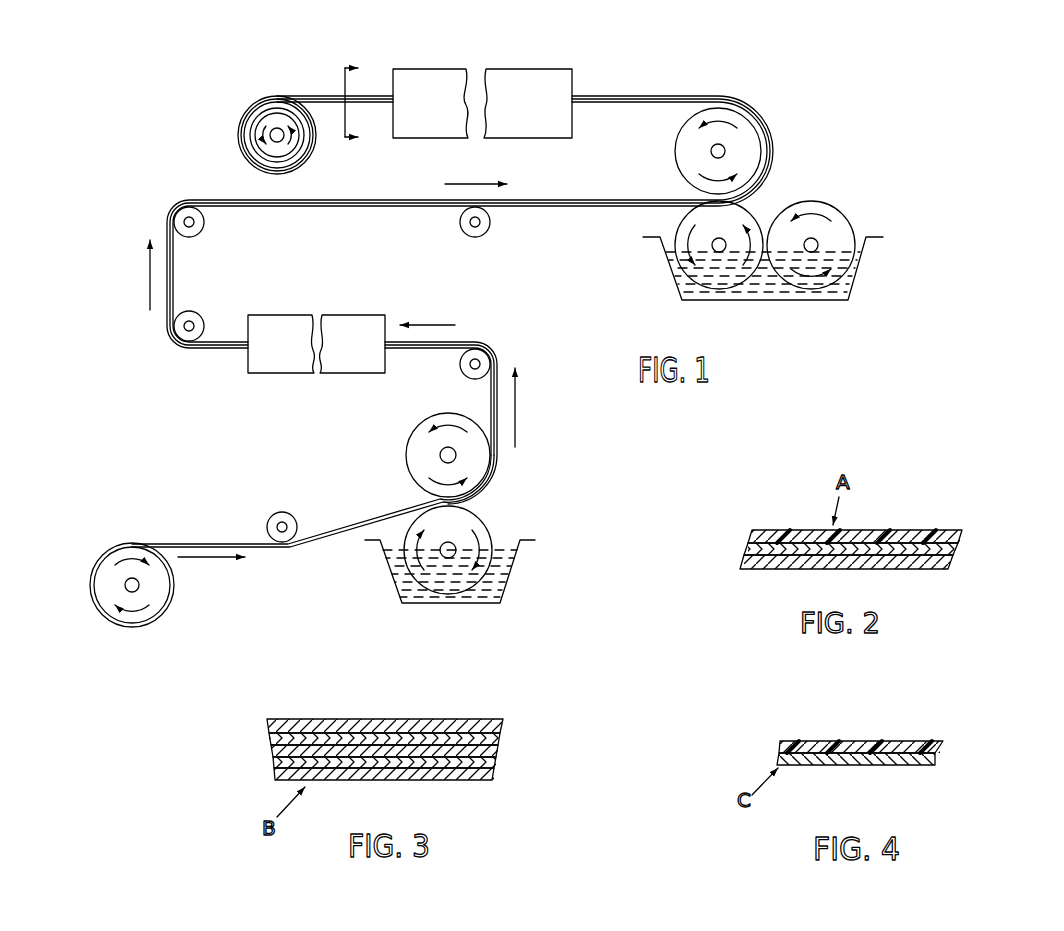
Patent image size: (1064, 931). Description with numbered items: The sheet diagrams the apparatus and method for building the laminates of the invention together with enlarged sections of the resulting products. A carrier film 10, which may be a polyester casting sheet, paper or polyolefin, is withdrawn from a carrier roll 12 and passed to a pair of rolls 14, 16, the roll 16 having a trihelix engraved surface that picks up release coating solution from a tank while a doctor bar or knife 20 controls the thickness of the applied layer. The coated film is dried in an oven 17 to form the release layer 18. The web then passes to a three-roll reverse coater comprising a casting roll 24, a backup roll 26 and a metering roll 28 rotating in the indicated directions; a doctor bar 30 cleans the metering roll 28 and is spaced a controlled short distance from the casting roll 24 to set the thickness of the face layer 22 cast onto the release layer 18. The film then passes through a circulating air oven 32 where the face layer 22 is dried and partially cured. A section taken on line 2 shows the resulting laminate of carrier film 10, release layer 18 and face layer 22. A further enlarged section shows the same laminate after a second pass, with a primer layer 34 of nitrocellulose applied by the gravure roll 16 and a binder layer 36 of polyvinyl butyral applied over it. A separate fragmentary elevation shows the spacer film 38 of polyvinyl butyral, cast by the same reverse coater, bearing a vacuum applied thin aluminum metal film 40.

In FIG. 1, the section line 2— 2 is at (360, 102).
In FIG. 1, the carrier film 10 is at (188, 543).
In FIG. 2, the carrier film 10 is at (757, 569).
In FIG. 3, the carrier film 10 is at (490, 777).
In FIG. 1, the carrier roll 12 is at (160, 616).
In FIG. 1, the roll 14 is at (408, 432).
In FIG. 1, the roll 16 is at (481, 520).
In FIG. 1, the oven 17 is at (351, 315).
In FIG. 1, the release layer 18 is at (223, 342).
In FIG. 2, the release layer 18 is at (950, 548).
In FIG. 3, the release layer 18 is at (277, 760).
In FIG. 1, the doctor bar or knife 20 is at (382, 523).
In FIG. 2, the face layer 22 is at (917, 530).
In FIG. 3, the face layer 22 is at (497, 751).
In FIG. 1, the casting roll 24 is at (662, 214).
In FIG. 1, the backup roll 26 is at (676, 143).
In FIG. 1, the metering roll 28 is at (826, 203).
In FIG. 1, the doctor bar 30 is at (877, 202).
In FIG. 1, the oven 32 is at (575, 70).
In FIG. 3, the primer layer 34 is at (263, 740).
In FIG. 3, the binder layer 36 is at (380, 719).
In FIG. 4, the spacer film 38 is at (915, 741).
In FIG. 4, the aluminum metal film 40 is at (917, 765).